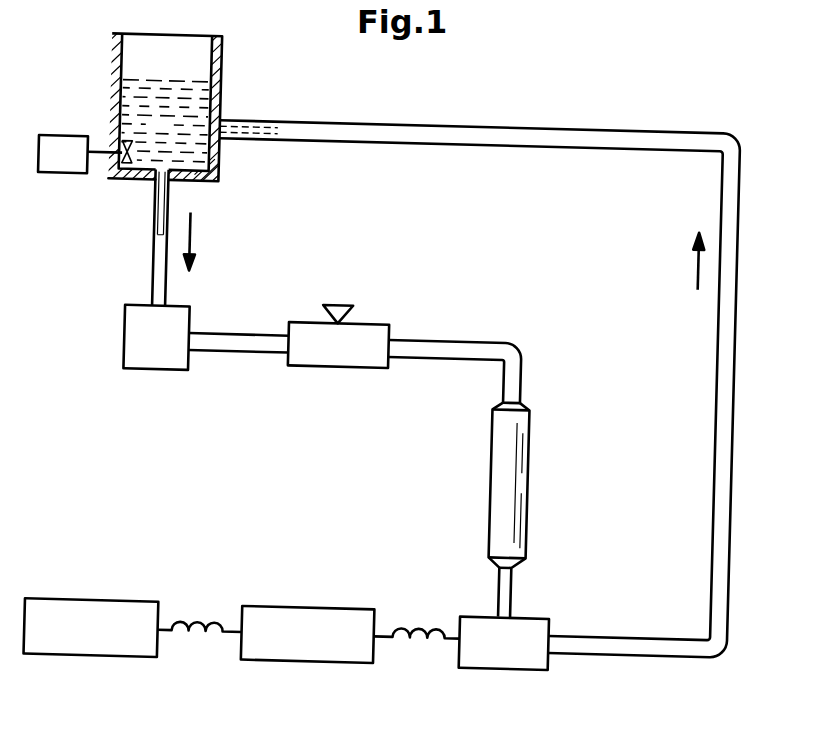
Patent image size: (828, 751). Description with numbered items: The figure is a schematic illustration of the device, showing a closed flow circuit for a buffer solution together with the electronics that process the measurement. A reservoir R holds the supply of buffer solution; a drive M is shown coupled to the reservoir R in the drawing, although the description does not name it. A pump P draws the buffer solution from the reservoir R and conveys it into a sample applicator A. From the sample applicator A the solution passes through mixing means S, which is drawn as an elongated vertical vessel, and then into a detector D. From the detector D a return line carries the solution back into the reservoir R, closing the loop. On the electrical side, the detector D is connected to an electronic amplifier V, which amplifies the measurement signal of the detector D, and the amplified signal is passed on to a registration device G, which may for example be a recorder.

The reservoir R is at (166, 106).
The motor M is at (85, 154).
The pump P is at (156, 337).
The sample applicator A is at (339, 336).
The mixing means S is at (508, 509).
The detector D is at (504, 643).
The registration device G is at (91, 627).
The electronic amplifier V is at (308, 634).